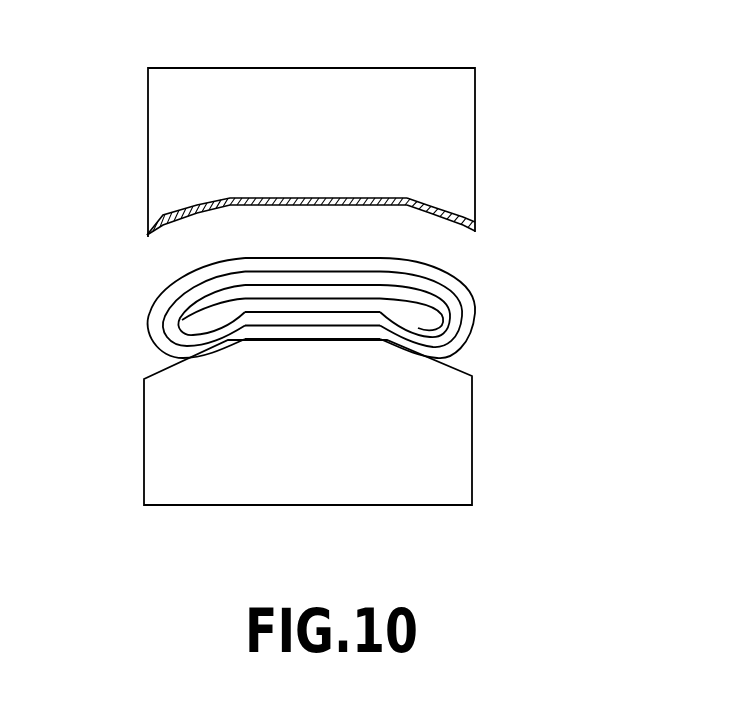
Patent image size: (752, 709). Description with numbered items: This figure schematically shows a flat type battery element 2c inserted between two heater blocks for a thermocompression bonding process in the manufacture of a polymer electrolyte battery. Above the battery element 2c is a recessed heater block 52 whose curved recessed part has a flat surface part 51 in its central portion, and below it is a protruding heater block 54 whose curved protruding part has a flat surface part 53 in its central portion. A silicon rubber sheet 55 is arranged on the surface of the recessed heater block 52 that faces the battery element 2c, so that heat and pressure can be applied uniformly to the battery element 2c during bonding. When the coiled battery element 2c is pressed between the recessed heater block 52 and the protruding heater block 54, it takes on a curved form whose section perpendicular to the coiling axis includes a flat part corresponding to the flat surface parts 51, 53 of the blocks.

The recessed heater block 52 is at (455, 123).
The flat surface part 51 is at (288, 206).
The silicon rubber sheet 55 is at (435, 215).
The battery element 2c is at (167, 300).
The flat surface part 53 is at (340, 337).
The protruding heater block 54 is at (450, 430).